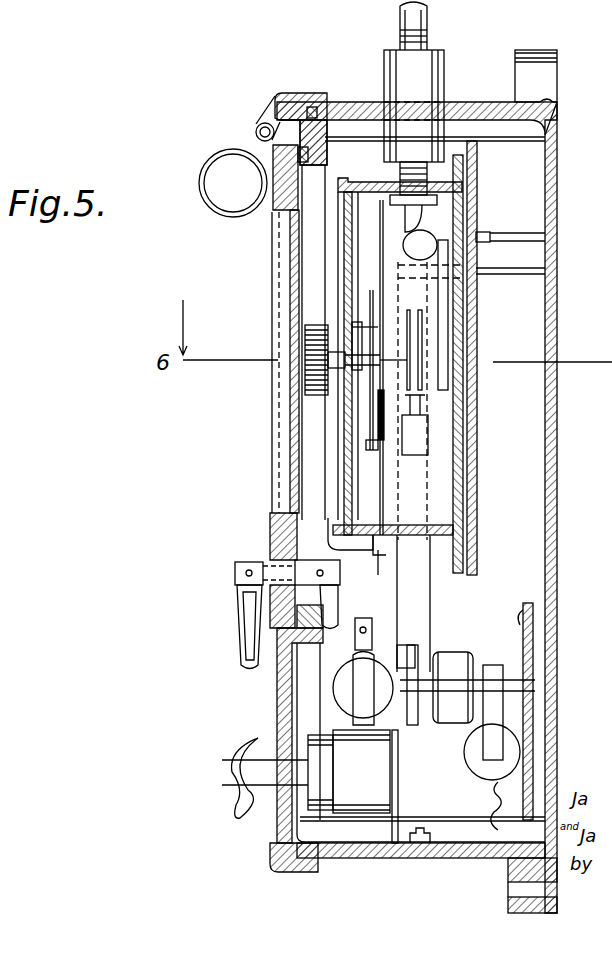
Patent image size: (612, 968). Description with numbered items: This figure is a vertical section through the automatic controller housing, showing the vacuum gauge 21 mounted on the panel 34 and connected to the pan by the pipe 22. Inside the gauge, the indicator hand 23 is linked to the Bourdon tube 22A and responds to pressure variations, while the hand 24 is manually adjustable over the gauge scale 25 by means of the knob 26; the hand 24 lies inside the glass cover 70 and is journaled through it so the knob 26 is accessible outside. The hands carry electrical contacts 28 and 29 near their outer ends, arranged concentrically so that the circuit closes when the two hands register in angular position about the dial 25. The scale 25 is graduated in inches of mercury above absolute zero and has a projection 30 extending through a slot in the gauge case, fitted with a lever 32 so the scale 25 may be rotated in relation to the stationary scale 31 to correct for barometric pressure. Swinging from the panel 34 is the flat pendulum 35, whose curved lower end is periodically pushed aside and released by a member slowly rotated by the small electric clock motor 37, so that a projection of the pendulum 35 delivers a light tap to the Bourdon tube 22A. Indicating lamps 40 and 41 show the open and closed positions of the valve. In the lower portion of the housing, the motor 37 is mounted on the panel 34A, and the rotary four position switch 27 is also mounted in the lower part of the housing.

The vacuum gauge 21 is at (380, 190).
The pipe 22 is at (428, 20).
The Bourdon tube 22A is at (430, 430).
The indicator hand 23 is at (370, 396).
The adjustable hand 24 is at (378, 322).
The gauge scale 25 is at (382, 455).
The knob 26 is at (305, 340).
The rotary four position switch 27 is at (218, 772).
The electrical contact 28 is at (358, 340).
The electrical contact 29 is at (378, 447).
The projection 30 is at (386, 556).
The stationary scale 31 is at (382, 460).
The lever 32 is at (328, 520).
The panel 34 is at (478, 318).
The panel 34A is at (535, 605).
The pendulum 35 is at (420, 620).
The electric clock motor 37 is at (458, 660).
The indicating lamp 40 is at (213, 165).
The indicating lamp 41 is at (378, 575).
The glass cover 70 is at (348, 265).